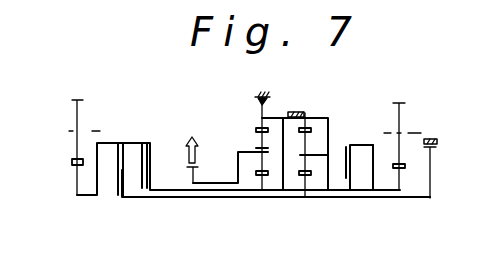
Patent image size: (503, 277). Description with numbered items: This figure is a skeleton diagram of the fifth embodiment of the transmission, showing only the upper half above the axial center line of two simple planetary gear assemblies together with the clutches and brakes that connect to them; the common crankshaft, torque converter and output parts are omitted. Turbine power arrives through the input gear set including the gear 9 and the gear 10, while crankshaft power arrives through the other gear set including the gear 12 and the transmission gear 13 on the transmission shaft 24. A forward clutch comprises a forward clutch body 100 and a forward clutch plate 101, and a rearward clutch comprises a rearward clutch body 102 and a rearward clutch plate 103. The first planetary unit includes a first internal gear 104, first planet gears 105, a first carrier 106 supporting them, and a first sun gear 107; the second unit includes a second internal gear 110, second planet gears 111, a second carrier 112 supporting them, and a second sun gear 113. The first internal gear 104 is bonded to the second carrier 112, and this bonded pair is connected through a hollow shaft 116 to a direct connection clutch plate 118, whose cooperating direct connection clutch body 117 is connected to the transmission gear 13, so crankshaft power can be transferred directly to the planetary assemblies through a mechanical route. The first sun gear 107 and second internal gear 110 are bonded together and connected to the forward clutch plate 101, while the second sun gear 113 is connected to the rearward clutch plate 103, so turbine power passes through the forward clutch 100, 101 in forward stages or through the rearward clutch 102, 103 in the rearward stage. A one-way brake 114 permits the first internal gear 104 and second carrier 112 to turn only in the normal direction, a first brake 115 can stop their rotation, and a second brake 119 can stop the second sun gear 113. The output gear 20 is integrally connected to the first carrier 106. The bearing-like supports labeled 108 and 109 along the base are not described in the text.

The gear 9 is at (77, 143).
The gear 10 is at (77, 178).
The gear 12 is at (402, 148).
The transmission gear 13 is at (398, 178).
The output gear 20 is at (197, 173).
The transmission shaft 24 is at (392, 197).
The forward clutch body 100 is at (140, 172).
The forward clutch plate 101 is at (146, 173).
The rearward clutch body 102 is at (117, 172).
The rearward clutch plate 103 is at (125, 185).
The first internal gear 104 is at (259, 117).
The first planet gears 105 is at (257, 140).
The first carrier 106 is at (241, 148).
The first sun gear 107 is at (271, 191).
The bearing 108 is at (240, 198).
The bearing 109 is at (210, 198).
The second internal gear 110 is at (307, 126).
The second planet gears 111 is at (312, 152).
The second carrier 112 is at (330, 147).
The second sun gear 113 is at (307, 188).
The one-way brake 114 is at (257, 97).
The first brake 115 is at (292, 110).
The hollow shaft 116 is at (335, 189).
The direct connection clutch body 117 is at (362, 174).
The direct connection clutch plate 118 is at (352, 170).
The second brake 119 is at (434, 134).